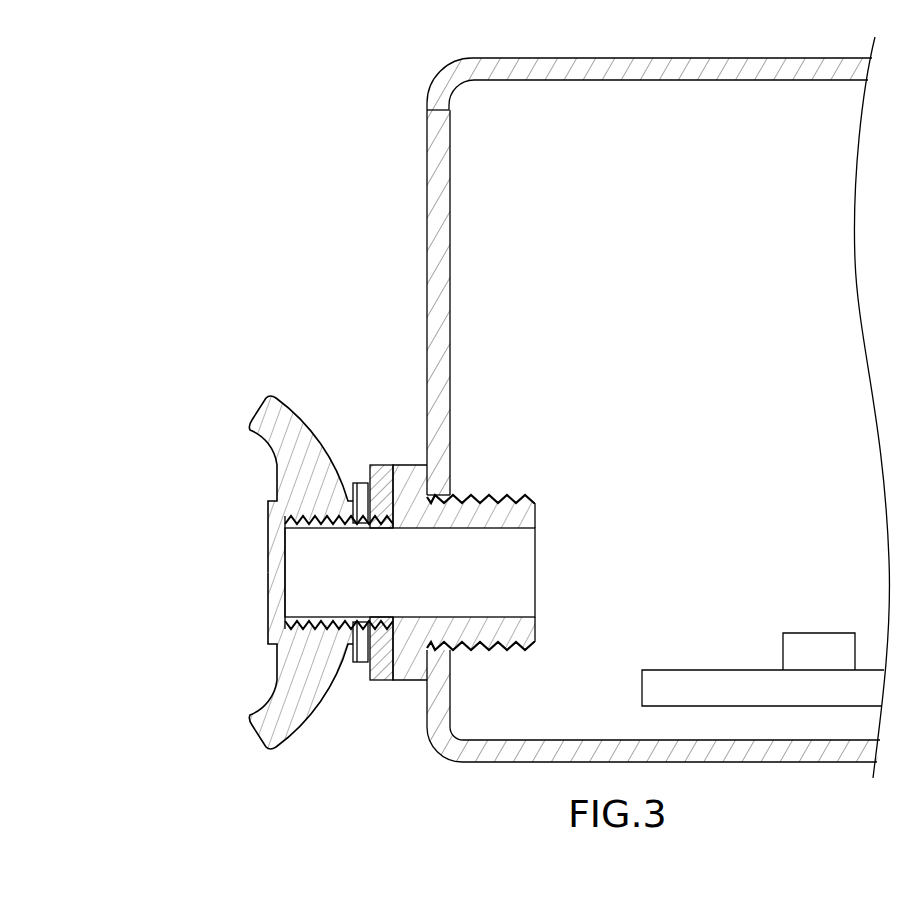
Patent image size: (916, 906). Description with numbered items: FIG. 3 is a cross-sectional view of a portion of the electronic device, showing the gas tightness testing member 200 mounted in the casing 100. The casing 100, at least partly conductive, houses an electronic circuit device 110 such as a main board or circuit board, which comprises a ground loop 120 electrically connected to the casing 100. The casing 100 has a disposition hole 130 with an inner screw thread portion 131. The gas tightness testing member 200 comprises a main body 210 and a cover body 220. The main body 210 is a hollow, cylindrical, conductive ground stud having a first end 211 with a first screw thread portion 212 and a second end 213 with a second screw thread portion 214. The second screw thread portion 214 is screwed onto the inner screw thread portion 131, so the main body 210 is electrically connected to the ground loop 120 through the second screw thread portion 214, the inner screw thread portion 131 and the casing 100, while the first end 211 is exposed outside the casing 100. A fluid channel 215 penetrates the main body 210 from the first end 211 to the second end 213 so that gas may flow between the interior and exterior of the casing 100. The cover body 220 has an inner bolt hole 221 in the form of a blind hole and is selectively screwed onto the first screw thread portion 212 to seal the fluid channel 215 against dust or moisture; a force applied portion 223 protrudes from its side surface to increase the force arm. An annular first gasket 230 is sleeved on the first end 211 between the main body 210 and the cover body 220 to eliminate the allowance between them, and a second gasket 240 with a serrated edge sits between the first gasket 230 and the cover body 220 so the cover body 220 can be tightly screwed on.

The casing 100 is at (497, 763).
The electronic circuit device 110 is at (684, 680).
The ground loop 120 is at (820, 642).
The disposition hole 130 is at (452, 640).
The inner screw thread portion 131 is at (438, 497).
The gas tightness testing member 200 is at (163, 580).
The main body 210 is at (412, 438).
The first end 211 is at (282, 560).
The first screw thread portion 212 is at (353, 652).
The second end 213 is at (537, 552).
The second screw thread portion 214 is at (498, 491).
The fluid channel 215 is at (405, 587).
The cover body 220 is at (240, 610).
The inner bolt hole 221 is at (327, 640).
The force applied portion 223 is at (282, 694).
The first gasket 230 is at (382, 470).
The second gasket 240 is at (358, 481).